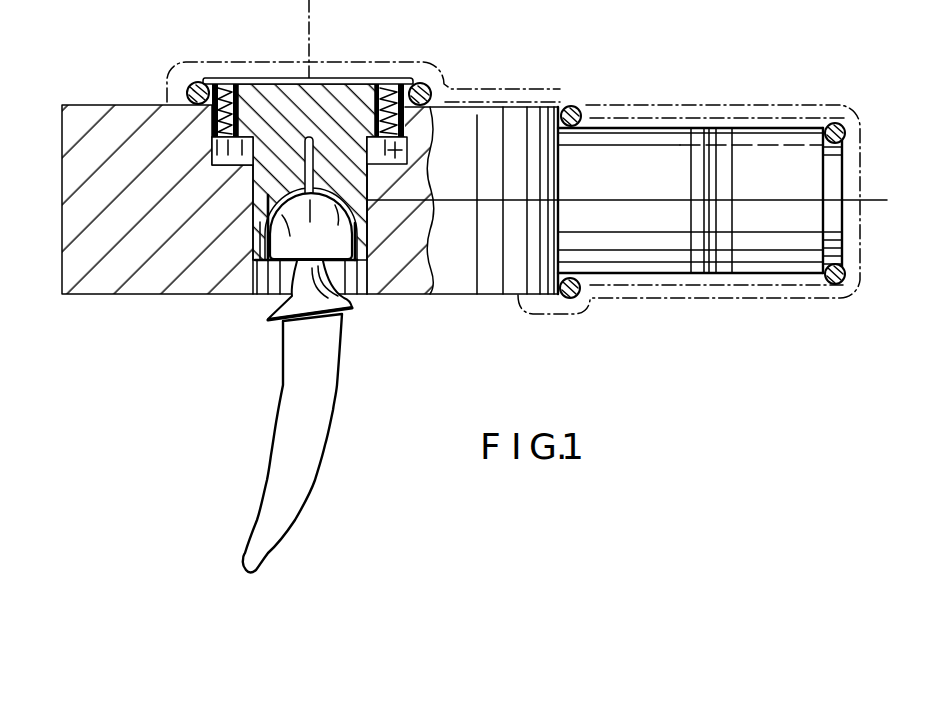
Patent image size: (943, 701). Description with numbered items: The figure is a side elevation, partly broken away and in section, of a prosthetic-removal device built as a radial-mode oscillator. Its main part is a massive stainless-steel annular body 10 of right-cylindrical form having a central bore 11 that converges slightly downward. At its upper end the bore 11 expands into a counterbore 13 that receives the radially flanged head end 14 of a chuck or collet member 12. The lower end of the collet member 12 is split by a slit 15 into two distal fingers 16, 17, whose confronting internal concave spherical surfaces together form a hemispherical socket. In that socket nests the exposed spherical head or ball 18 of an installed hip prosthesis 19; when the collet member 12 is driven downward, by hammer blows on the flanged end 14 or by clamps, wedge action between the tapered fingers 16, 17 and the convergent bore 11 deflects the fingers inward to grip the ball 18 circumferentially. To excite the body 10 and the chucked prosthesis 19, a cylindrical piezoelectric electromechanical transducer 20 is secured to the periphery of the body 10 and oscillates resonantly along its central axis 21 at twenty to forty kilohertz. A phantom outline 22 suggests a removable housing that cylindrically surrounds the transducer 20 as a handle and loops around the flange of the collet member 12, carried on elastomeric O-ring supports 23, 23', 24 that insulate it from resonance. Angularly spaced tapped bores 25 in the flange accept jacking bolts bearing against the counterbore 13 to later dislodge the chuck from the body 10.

The annular body 10 is at (469, 130).
The central bore 11 is at (270, 300).
The chuck or collet member 12 is at (345, 79).
The counterbore 13 is at (402, 144).
The radially flanged head end 14 is at (211, 80).
The slit 15 is at (295, 130).
The finger 16 is at (262, 230).
The finger 17 is at (365, 222).
The spherical head or ball 18 is at (254, 240).
The hip prosthesis 19 is at (269, 458).
The electromechanical transducer 20 is at (734, 274).
The central axis 21 is at (782, 170).
The housing 22 is at (640, 101).
The elastomeric O-ring support 23 is at (831, 178).
The elastomeric O-ring support 23' is at (579, 177).
The elastomeric O-ring support 24 is at (426, 84).
The tapped bore 25 is at (228, 82).